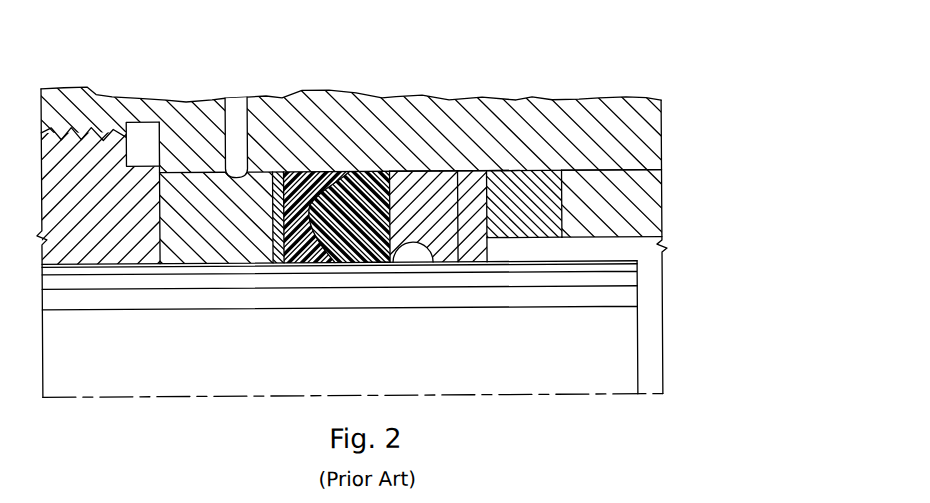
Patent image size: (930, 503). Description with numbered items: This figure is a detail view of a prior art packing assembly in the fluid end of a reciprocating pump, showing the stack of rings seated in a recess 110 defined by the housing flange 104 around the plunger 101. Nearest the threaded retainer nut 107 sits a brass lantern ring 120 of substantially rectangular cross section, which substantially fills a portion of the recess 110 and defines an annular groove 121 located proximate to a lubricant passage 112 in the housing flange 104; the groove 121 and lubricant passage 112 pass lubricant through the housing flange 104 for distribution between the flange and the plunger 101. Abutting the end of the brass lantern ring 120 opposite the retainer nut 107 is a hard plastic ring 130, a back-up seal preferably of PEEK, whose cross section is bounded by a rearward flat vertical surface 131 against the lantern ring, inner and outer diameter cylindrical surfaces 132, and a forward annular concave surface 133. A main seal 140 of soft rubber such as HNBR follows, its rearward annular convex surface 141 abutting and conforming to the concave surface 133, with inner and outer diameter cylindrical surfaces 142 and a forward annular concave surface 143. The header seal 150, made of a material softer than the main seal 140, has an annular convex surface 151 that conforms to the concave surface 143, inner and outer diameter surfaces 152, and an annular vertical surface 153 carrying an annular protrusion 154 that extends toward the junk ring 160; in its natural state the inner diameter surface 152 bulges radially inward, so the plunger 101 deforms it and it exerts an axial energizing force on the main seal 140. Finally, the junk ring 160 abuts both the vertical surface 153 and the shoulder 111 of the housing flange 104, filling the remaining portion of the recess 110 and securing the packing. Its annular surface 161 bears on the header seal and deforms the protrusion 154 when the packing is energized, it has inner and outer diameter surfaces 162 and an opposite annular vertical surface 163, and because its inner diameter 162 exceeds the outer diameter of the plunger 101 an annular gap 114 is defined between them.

The plunger 101 is at (640, 321).
The housing flange 104 is at (633, 130).
The threaded retainer nut 107 is at (133, 250).
The recess 110 is at (503, 182).
The shoulder 111 is at (575, 232).
The lubricant passage 112 is at (245, 168).
The annular gap 114 is at (630, 250).
The brass lantern ring 120 is at (182, 246).
The annular groove 121 is at (226, 98).
The hard plastic ring 130 is at (312, 250).
The flat vertical surface 131 is at (275, 246).
The inner and outer diameter cylindrical surfaces 132 is at (278, 176).
The annular concave surface 133 is at (333, 200).
The main seal 140 is at (395, 176).
The annular convex surface 141 is at (333, 250).
The inner and outer diameter cylindrical surfaces 142 is at (386, 180).
The annular concave surface 143 is at (435, 260).
The header seal 150 is at (466, 250).
The annular convex surface 151 is at (406, 173).
The inner and outer diameter surfaces 152 is at (438, 173).
The annular vertical surface 153 is at (532, 240).
The annular protrusion 154 is at (374, 254).
The junk ring 160 is at (548, 215).
The annular surface 161 is at (483, 195).
The inner and outer diameter surfaces 162 is at (544, 173).
The annular vertical surface 163 is at (567, 174).